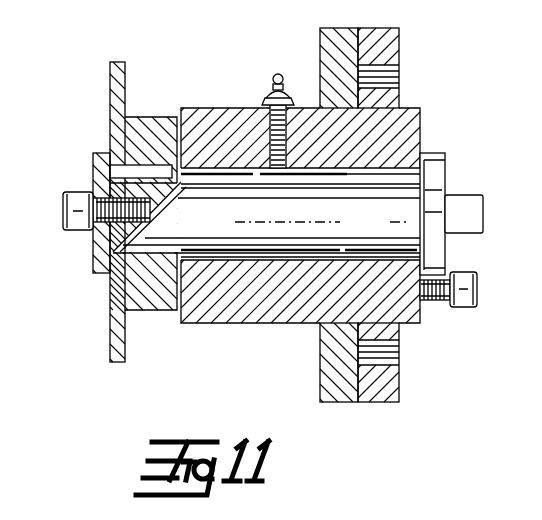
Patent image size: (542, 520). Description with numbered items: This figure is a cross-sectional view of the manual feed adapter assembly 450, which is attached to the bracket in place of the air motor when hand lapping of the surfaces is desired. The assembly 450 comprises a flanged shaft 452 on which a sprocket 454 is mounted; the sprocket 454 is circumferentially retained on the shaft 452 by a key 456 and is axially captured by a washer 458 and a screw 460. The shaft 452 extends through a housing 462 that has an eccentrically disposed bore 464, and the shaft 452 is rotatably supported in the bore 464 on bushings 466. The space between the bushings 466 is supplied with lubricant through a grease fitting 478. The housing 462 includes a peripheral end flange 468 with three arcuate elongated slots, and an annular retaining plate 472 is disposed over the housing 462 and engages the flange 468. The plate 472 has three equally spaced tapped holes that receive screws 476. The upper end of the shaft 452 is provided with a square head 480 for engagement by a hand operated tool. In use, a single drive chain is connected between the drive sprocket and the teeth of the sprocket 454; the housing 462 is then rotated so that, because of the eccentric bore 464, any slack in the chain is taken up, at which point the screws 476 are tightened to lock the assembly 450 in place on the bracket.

The manual feed adapter assembly 450 is at (412, 337).
The flanged shaft 452 is at (412, 228).
The sprocket 454 is at (153, 125).
The key 456 is at (127, 168).
The washer 458 is at (97, 262).
The screw 460 is at (82, 196).
The housing 462 is at (261, 324).
The eccentrically disposed bore 464 is at (287, 259).
The bushings 466 is at (378, 259).
The peripheral end flange 468 is at (390, 50).
The annular retaining plate 472 is at (332, 55).
The screws 476 is at (478, 289).
The grease fitting 478 is at (268, 93).
The square head 480 is at (457, 195).